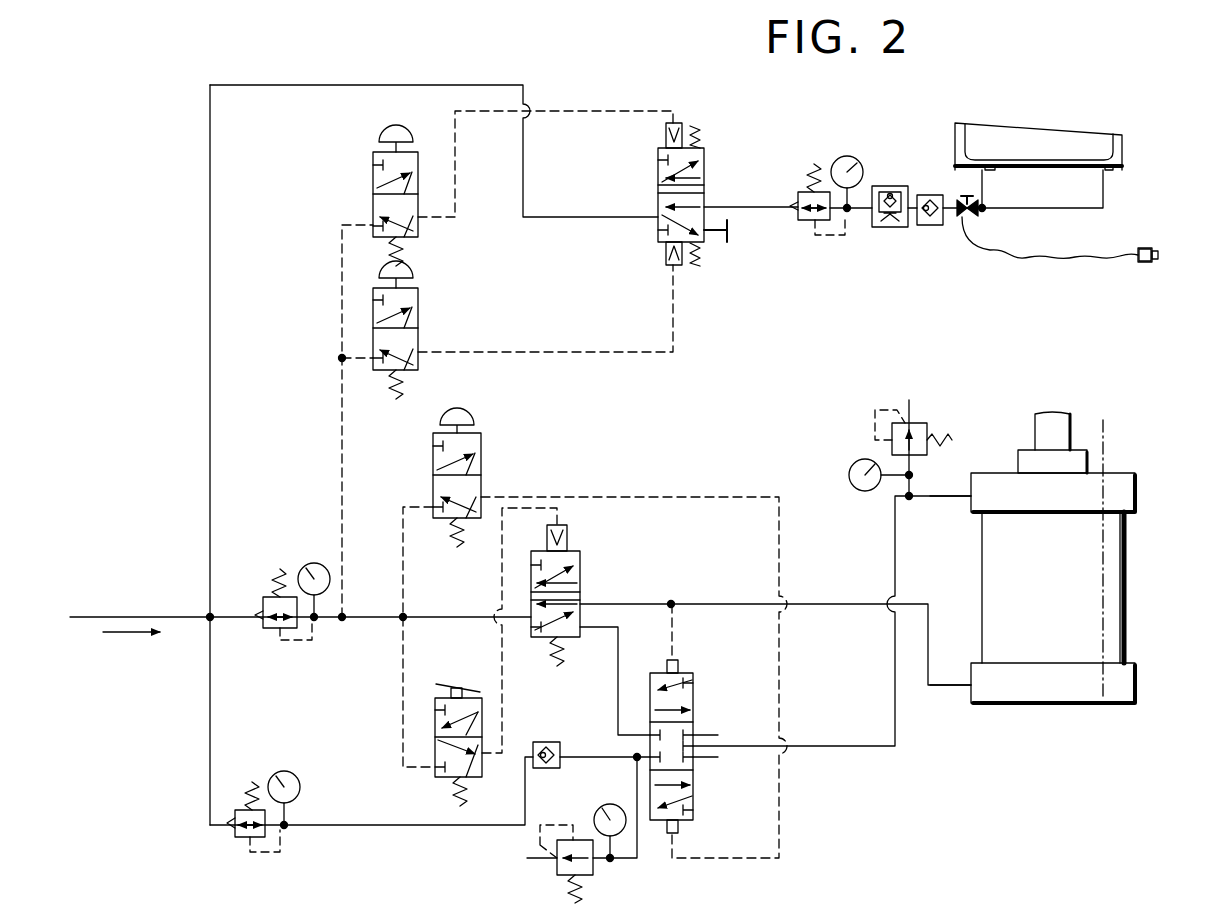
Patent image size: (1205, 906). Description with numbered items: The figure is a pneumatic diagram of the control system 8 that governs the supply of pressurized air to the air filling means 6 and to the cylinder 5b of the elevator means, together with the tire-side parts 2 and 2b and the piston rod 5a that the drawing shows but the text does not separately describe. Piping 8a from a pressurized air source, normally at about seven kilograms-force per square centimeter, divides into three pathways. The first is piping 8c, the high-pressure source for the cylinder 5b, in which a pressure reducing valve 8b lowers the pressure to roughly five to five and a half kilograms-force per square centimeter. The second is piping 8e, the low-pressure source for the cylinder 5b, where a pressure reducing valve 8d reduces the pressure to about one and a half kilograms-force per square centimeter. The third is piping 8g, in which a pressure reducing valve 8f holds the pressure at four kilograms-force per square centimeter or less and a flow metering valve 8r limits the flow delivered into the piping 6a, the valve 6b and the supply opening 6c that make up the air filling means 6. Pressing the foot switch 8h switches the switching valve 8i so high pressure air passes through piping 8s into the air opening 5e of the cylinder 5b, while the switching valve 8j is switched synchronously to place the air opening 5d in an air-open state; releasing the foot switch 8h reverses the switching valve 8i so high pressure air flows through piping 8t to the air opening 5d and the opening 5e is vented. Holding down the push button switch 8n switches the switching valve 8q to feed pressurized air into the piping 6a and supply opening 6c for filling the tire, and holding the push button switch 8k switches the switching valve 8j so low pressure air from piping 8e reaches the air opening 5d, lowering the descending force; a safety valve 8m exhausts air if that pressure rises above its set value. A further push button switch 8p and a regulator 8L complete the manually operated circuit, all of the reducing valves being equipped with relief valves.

The wafer 2 is at (1122, 150).
The recess of wafer 2b is at (1080, 160).
The piston rod 5a is at (1070, 433).
The cylinder 5b is at (1127, 582).
The air opening 5d is at (970, 506).
The air opening 5e is at (970, 695).
The air filling means 6 is at (1122, 229).
The piping 6a is at (982, 173).
The valve 6b is at (965, 200).
The supply opening 6c is at (1148, 262).
The control system 8 is at (738, 412).
The piping 8a is at (120, 617).
The pressure reducing valve 8b is at (263, 603).
The piping 8c is at (352, 620).
The pressure reducing valve 8d is at (242, 810).
The piping 8e is at (370, 828).
The pressure reducing valve 8f is at (800, 192).
The piping 8g is at (857, 220).
The foot switch 8h is at (446, 690).
The switching valve 8i is at (580, 567).
The switching valve 8j is at (693, 683).
The push button switch 8k is at (481, 441).
The pressure regulator 8L is at (593, 867).
The safety valve 8m is at (918, 423).
The push button switch 8n is at (373, 171).
The push button switch 8p is at (418, 302).
The switching valve 8q is at (704, 172).
The flow metering valve 8r is at (886, 196).
The piping 8s is at (655, 609).
The piping 8t is at (616, 692).